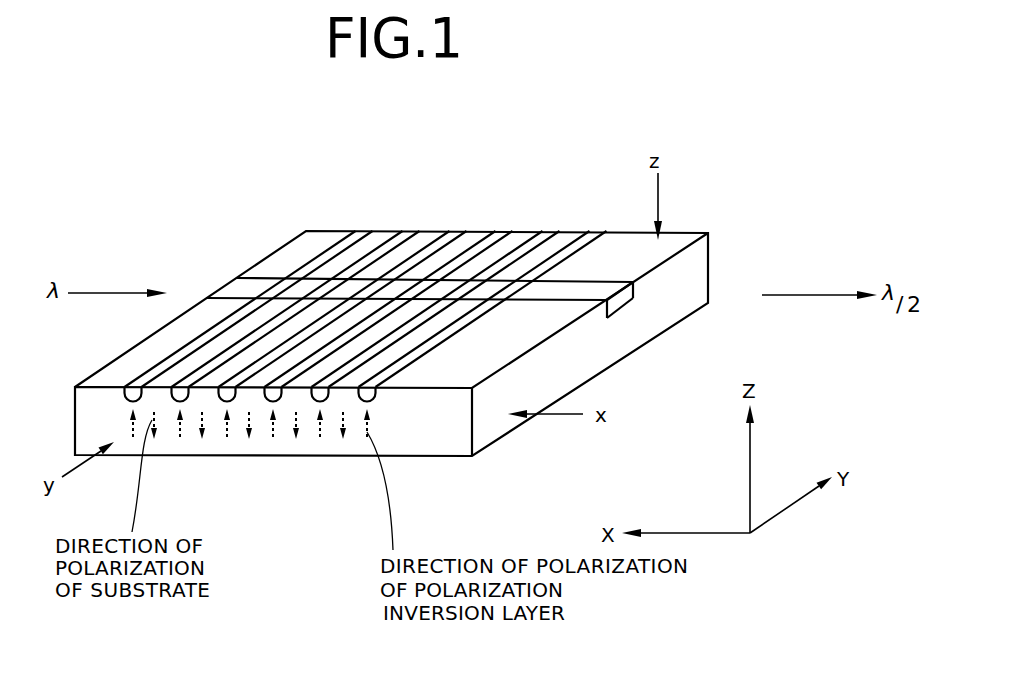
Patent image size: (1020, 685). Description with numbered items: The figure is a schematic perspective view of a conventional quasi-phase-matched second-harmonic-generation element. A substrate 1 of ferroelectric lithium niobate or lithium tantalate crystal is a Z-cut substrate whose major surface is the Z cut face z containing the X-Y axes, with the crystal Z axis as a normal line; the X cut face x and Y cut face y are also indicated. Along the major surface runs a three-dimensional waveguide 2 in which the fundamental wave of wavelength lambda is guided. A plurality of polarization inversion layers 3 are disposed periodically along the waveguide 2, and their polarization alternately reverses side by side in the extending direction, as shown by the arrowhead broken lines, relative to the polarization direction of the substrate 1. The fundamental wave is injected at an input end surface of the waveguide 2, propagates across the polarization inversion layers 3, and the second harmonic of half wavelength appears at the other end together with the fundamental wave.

The substrate 1 is at (716, 236).
The three-dimensional waveguide 2 is at (635, 293).
The polarization inversion layers 3 is at (555, 234).